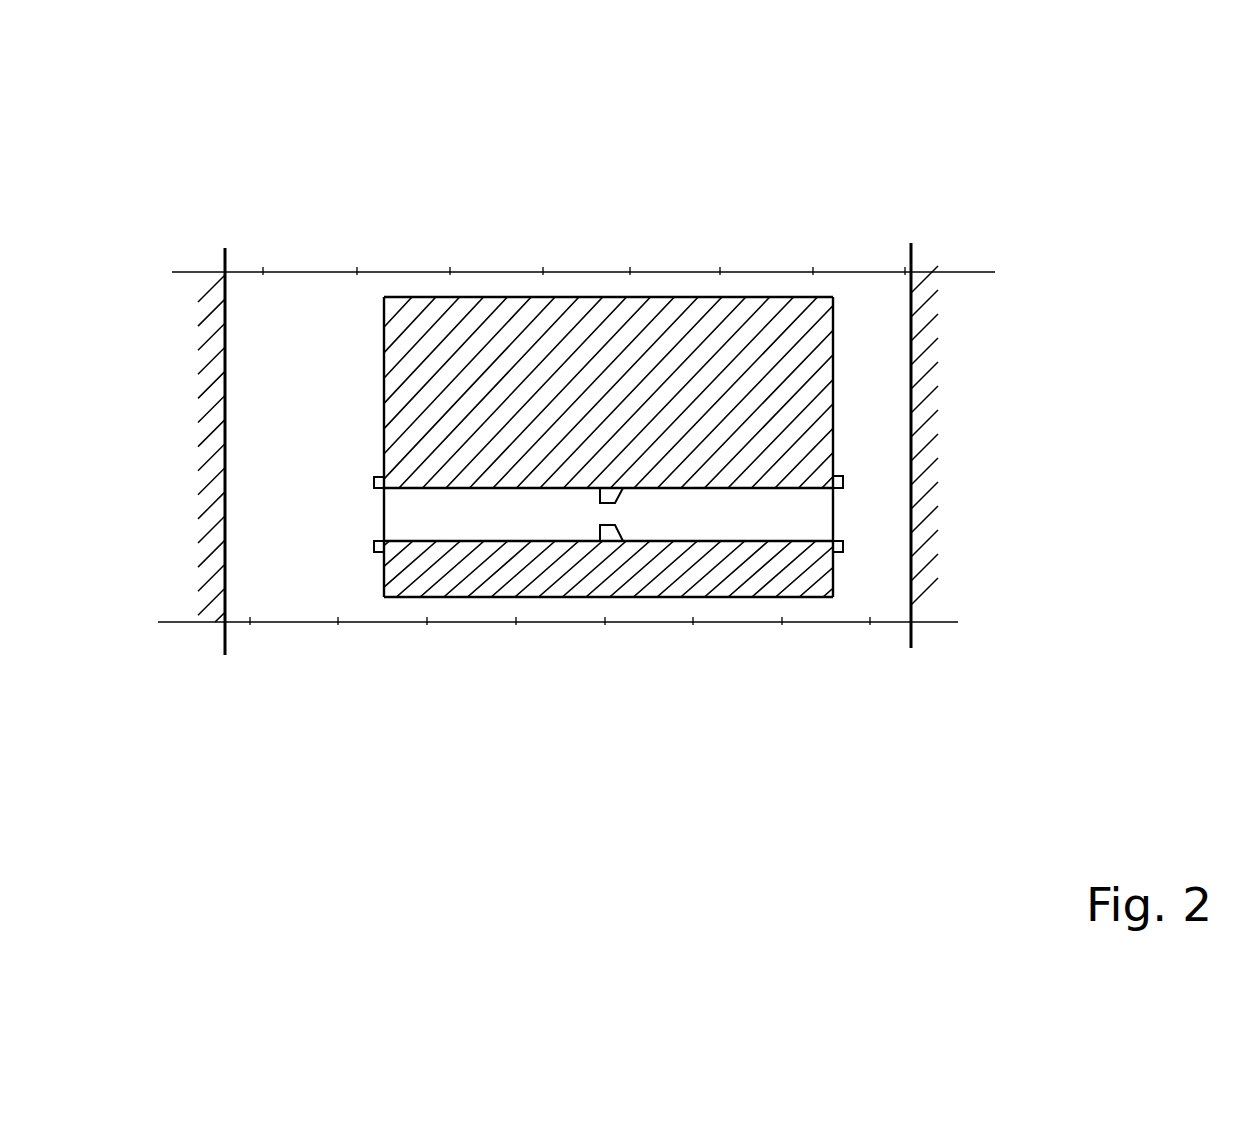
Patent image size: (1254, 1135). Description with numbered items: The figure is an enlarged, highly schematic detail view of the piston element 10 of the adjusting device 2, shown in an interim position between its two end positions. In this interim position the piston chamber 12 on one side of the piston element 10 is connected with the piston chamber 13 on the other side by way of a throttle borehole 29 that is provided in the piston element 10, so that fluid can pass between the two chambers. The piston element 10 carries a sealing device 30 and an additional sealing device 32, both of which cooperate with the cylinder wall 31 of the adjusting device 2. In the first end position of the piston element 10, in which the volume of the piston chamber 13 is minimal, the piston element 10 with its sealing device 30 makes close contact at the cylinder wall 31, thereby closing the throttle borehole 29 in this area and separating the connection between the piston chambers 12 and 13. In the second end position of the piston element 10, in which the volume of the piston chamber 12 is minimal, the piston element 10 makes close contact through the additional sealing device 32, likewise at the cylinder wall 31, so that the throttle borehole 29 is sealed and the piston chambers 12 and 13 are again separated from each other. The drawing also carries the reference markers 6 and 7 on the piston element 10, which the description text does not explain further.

The adjusting device 2 is at (223, 206).
The first side of coupling body 6 is at (384, 390).
The second side of coupling body 7 is at (850, 375).
The piston element 10 is at (530, 565).
The piston chamber 12 is at (283, 533).
The piston chamber 13 is at (967, 508).
The throttle borehole 29 is at (706, 517).
The sealing device 30 is at (845, 478).
The cylinder wall 31 is at (925, 503).
The additional sealing device 32 is at (376, 553).